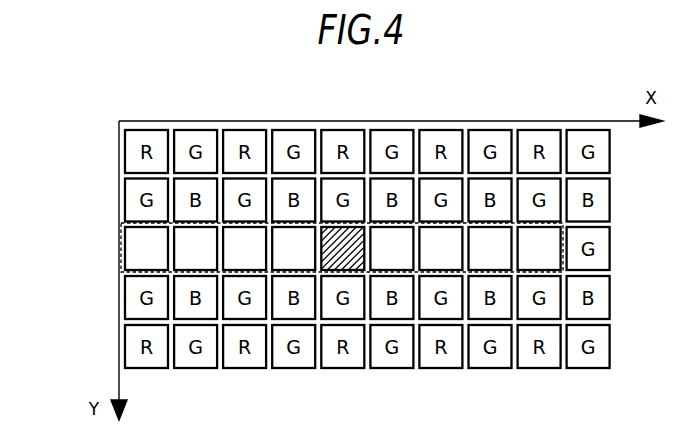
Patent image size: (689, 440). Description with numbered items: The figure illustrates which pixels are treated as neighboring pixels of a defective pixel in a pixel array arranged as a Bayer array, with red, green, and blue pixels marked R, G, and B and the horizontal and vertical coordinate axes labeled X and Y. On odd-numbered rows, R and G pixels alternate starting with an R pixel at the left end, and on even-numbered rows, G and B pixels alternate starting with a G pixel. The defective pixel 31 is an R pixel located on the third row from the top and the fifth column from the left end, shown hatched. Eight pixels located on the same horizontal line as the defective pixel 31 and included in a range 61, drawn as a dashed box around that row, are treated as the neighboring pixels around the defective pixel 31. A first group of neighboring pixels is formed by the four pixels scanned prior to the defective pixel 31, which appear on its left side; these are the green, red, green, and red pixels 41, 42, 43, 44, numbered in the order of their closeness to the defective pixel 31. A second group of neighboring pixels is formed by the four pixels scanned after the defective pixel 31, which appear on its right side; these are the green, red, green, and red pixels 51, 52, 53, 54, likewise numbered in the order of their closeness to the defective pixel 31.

The defective pixel 31 is at (329, 236).
The first neighboring pixel scanned prior to the defective pixel 41 is at (280, 236).
The second neighboring pixel scanned prior to the defective pixel 42 is at (231, 236).
The third neighboring pixel scanned prior to the defective pixel 43 is at (182, 236).
The fourth neighboring pixel scanned prior to the defective pixel 44 is at (133, 236).
The first neighboring pixel scanned after the defective pixel 51 is at (378, 236).
The second neighboring pixel scanned after the defective pixel 52 is at (426, 236).
The third neighboring pixel scanned after the defective pixel 53 is at (475, 236).
The fourth neighboring pixel scanned after the defective pixel 54 is at (524, 236).
The range 61 is at (118, 228).